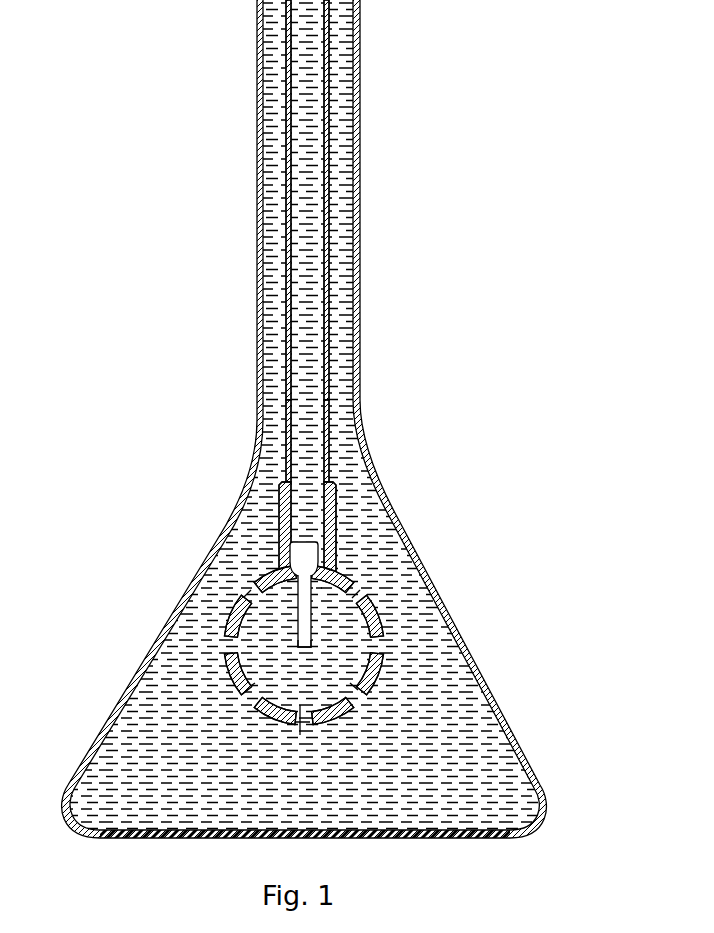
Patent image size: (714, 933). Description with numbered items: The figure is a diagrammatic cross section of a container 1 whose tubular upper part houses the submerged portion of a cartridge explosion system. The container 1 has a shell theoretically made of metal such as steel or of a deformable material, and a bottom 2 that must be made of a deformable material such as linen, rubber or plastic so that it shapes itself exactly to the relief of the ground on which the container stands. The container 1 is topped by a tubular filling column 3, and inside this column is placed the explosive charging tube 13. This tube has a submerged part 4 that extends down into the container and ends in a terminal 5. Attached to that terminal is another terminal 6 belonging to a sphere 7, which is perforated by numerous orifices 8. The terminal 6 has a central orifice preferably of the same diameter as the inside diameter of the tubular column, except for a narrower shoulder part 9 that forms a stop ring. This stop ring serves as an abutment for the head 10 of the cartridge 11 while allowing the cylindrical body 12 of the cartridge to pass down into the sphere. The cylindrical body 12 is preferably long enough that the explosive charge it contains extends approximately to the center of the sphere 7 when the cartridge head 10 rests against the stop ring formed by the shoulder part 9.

The container 1 is at (392, 517).
The bottom 2 is at (366, 835).
The tubular filling column 3 is at (357, 160).
The submerged part 4 is at (330, 433).
The terminal 5 is at (330, 499).
The terminal 6 is at (333, 553).
The sphere 7 is at (380, 617).
The orifices 8 is at (312, 729).
The shoulder part 9 is at (327, 578).
The head 10 is at (306, 557).
The cartridge 11 is at (311, 640).
The cylindrical body 12 is at (302, 613).
The explosive charging tube 13 is at (330, 38).